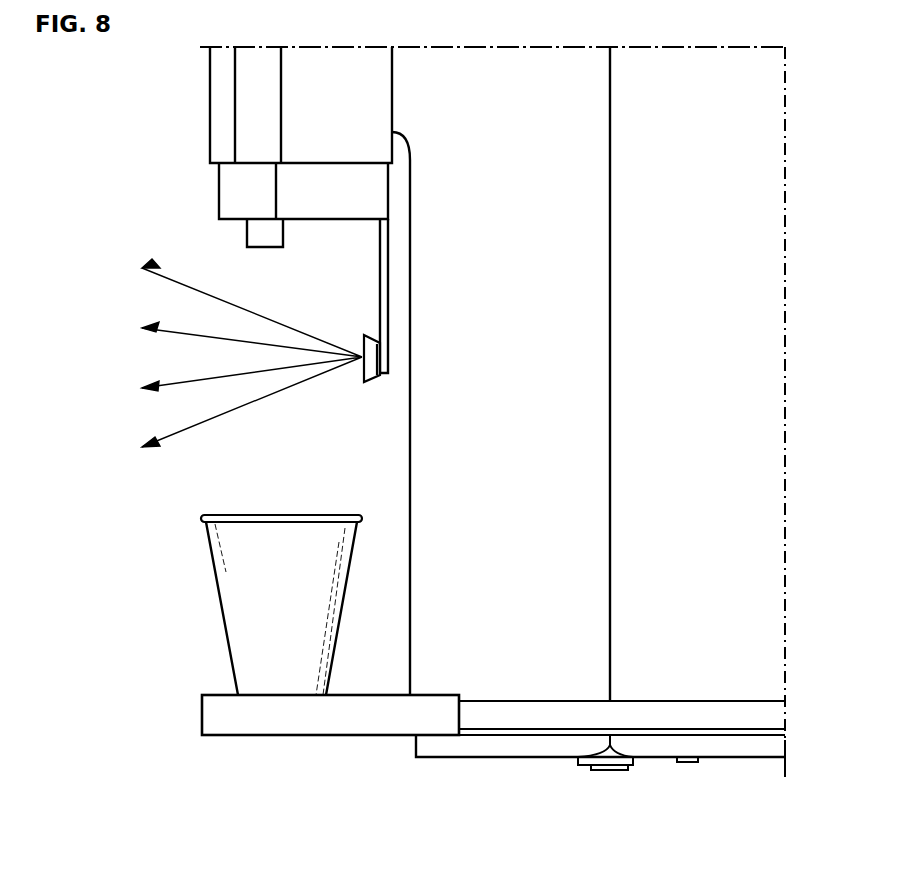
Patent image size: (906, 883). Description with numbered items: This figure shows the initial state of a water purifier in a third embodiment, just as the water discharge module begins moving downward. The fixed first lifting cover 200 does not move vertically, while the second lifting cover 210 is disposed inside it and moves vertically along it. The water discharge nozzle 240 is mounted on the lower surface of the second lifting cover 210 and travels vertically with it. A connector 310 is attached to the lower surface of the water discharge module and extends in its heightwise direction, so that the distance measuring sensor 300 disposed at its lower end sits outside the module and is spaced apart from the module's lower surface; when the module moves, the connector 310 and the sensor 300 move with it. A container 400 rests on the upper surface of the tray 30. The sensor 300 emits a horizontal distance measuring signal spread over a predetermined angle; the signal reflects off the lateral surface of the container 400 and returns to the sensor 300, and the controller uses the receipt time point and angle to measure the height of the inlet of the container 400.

The first lifting cover 200 is at (220, 98).
The second lifting cover 210 is at (230, 191).
The water discharge nozzle 240 is at (257, 234).
The connector 310 is at (385, 287).
The distance measuring sensor 300 is at (373, 357).
The container 400 is at (240, 614).
The tray 30 is at (220, 713).